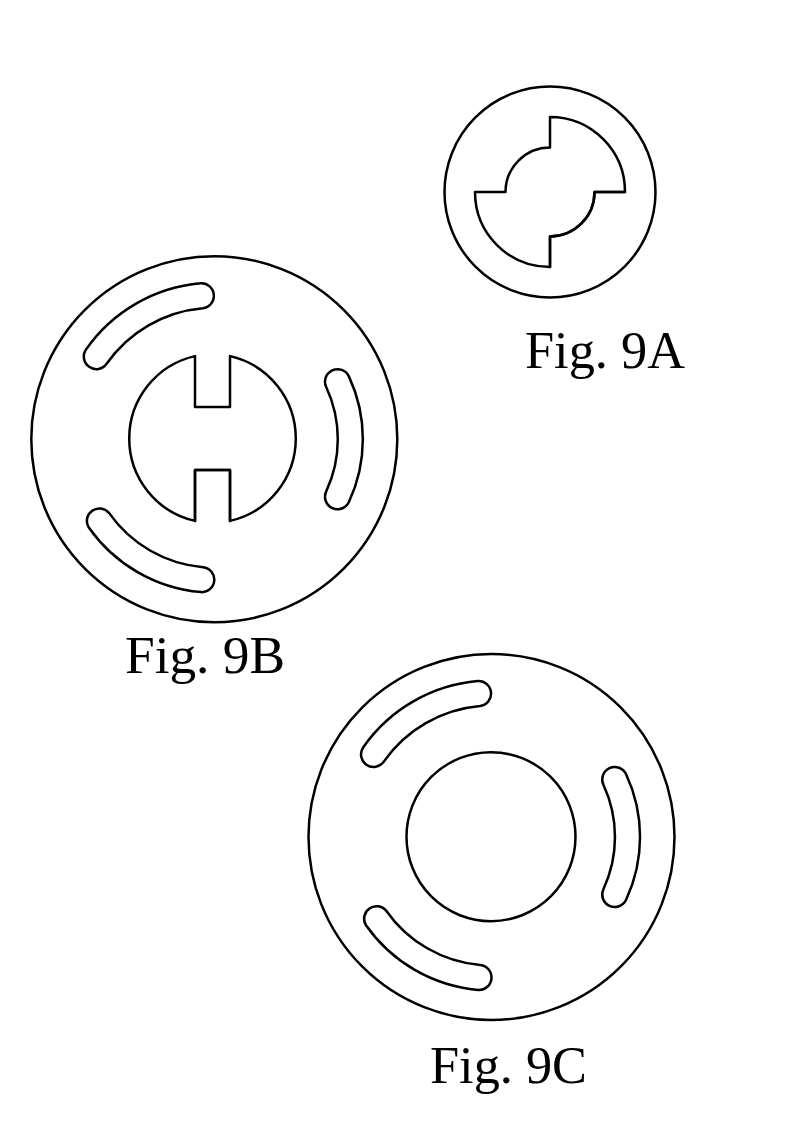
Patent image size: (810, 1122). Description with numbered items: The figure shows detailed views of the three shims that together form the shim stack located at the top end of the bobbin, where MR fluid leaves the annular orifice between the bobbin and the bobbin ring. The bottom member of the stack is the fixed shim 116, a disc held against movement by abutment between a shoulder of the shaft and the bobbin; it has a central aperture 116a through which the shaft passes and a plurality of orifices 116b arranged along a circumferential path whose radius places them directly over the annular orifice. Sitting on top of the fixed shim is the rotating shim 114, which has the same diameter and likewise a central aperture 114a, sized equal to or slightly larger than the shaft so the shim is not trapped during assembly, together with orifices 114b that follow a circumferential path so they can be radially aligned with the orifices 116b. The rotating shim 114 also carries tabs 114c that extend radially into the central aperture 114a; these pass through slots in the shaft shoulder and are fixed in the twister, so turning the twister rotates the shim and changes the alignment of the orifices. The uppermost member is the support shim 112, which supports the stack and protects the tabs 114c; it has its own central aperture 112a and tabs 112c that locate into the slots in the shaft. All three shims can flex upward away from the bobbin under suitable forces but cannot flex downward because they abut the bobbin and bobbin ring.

In FIG. 9A, the support shim 112 is at (536, 102).
In FIG. 9A, the central aperture 112a is at (530, 182).
In FIG. 9A, the tabs 112c is at (608, 208).
In FIG. 9B, the rotating shim 114 is at (252, 282).
In FIG. 9B, the central aperture 114a is at (272, 430).
In FIG. 9B, the orifices 114b is at (348, 477).
In FIG. 9B, the tabs 114c is at (210, 495).
In FIG. 9C, the fixed shim 116 is at (608, 717).
In FIG. 9C, the central aperture 116a is at (427, 845).
In FIG. 9C, the orifices 116b is at (622, 836).